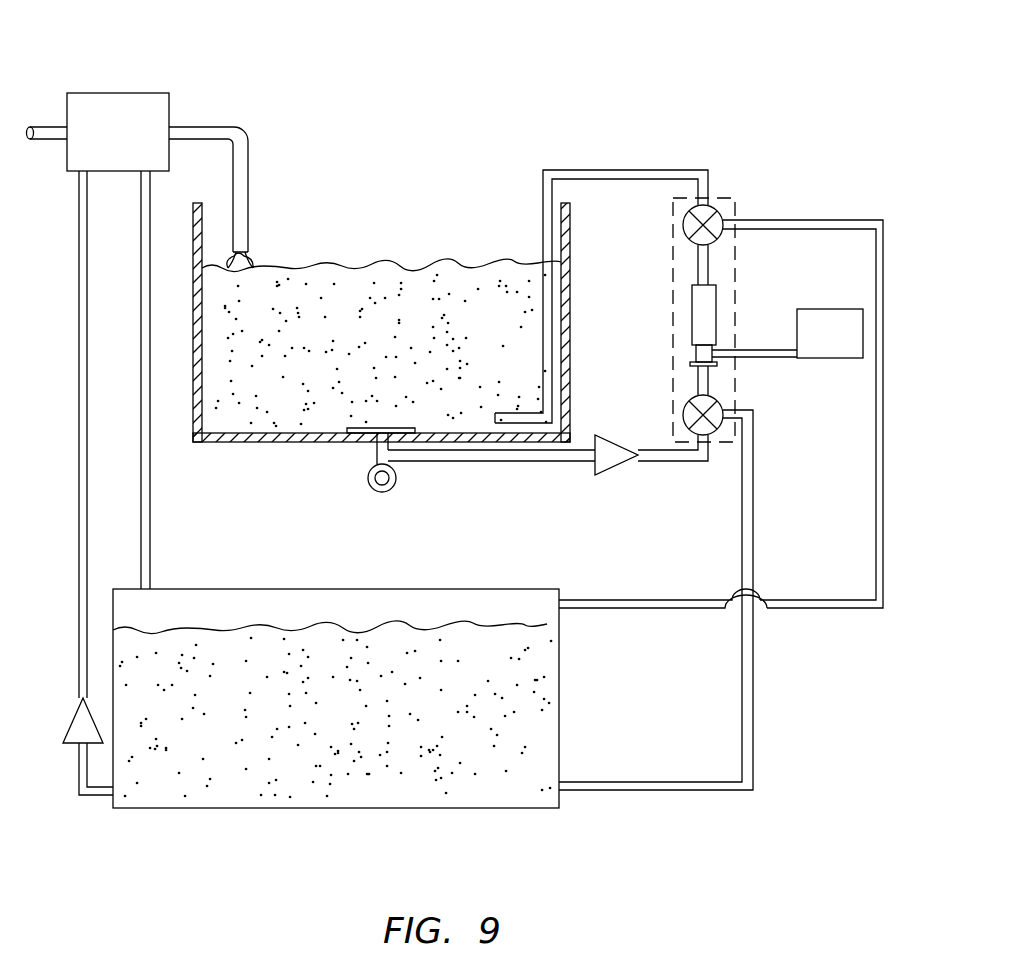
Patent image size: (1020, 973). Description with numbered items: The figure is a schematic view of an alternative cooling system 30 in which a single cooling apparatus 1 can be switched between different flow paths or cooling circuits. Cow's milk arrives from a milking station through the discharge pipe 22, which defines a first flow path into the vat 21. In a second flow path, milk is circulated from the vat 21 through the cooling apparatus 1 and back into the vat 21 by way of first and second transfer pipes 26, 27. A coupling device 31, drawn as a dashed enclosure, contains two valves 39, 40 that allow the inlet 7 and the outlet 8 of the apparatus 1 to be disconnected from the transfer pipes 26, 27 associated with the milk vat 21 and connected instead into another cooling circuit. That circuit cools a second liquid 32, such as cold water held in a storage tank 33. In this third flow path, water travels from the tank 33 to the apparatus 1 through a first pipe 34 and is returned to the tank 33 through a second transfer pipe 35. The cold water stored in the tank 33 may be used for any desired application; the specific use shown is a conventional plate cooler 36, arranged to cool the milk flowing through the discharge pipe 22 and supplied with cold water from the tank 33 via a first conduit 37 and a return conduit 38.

The cooling apparatus 1 is at (756, 265).
The inlet 7 is at (710, 385).
The outlet 8 is at (712, 270).
The vat 21 is at (383, 201).
The discharge pipe 22 is at (215, 124).
The first transfer pipe 26 is at (655, 462).
The second transfer pipe 27 is at (622, 170).
The system 30 is at (393, 92).
The coupling device 31 is at (672, 315).
The second liquid 32 is at (333, 724).
The storage tank 33 is at (447, 808).
The first pipe 34 is at (752, 717).
The second transfer pipe 35 is at (640, 608).
The plate cooler 36 is at (125, 93).
The first conduit 37 is at (78, 482).
The return conduit 38 is at (150, 515).
The valve 39 is at (683, 220).
The valve 40 is at (685, 407).